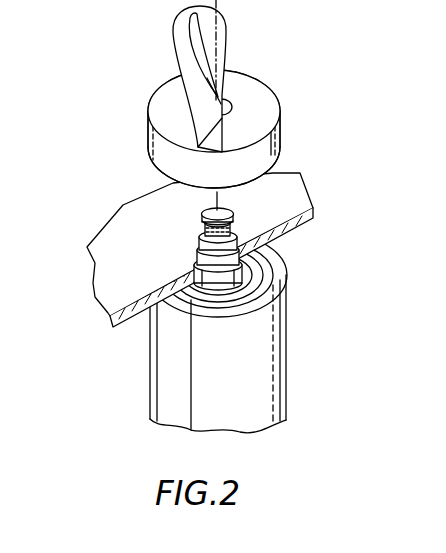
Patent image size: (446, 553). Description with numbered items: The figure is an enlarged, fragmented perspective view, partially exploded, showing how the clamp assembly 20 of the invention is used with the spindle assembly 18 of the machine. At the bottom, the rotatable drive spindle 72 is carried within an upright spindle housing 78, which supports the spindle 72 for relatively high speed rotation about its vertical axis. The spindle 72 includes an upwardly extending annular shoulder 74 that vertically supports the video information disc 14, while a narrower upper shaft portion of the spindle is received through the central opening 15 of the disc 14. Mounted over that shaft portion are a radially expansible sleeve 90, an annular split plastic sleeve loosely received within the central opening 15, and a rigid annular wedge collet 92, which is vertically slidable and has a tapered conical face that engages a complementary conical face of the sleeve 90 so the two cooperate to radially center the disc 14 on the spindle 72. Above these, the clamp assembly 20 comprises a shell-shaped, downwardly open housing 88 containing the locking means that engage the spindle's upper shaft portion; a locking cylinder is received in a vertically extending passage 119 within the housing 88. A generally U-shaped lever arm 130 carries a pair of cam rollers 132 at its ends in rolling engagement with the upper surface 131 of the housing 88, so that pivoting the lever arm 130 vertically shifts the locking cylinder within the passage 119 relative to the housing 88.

The clamp assembly 20 is at (138, 90).
The lever arm 130 is at (197, 37).
The vertically extending passage 119 is at (229, 92).
The upper surface 131 is at (260, 103).
The cam rollers 132 is at (223, 130).
The housing 88 is at (253, 118).
The video information disc 14 is at (293, 198).
The central opening 15 is at (191, 267).
The wedge collet 92 is at (244, 248).
The radially expansible sleeve 90 is at (249, 272).
The annular shoulder 74 is at (244, 297).
The rotatable drive spindle 72 is at (197, 289).
The spindle assembly 18 is at (253, 333).
The spindle housing 78 is at (167, 392).